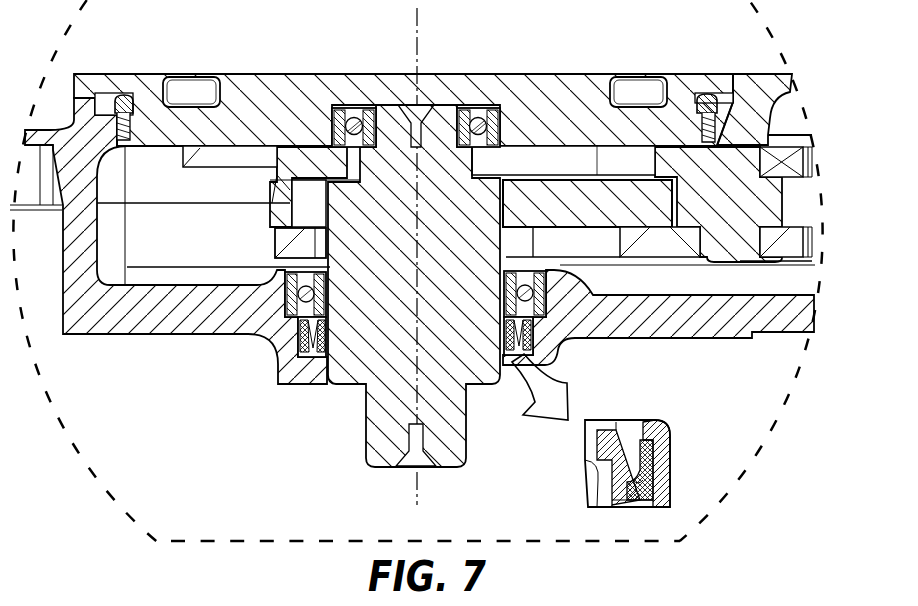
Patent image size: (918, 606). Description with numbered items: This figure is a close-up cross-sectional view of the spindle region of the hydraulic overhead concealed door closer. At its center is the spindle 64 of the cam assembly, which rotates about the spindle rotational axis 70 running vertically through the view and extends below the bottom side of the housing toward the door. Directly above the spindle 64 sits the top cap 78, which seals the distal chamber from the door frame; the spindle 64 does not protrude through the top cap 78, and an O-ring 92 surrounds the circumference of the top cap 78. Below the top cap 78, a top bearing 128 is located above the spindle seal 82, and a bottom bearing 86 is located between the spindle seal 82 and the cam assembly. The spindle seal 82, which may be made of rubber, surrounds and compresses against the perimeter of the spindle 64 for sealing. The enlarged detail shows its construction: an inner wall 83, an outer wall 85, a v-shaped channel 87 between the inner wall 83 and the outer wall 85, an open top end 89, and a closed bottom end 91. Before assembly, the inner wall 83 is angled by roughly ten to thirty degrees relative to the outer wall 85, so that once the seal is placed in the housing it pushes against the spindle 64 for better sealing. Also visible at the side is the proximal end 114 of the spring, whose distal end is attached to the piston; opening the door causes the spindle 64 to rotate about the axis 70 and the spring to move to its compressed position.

The spindle 64 is at (366, 427).
The spindle rotational axis 70 is at (418, 40).
The top cap 78 is at (303, 72).
The spindle seal 82 is at (284, 366).
The inner wall 83 is at (600, 452).
The outer wall 85 is at (670, 461).
The bottom bearing 86 is at (278, 302).
The v-shaped channel 87 is at (641, 422).
The open top end 89 is at (630, 442).
The closed bottom end 91 is at (612, 504).
The O-ring 92 is at (124, 94).
The proximal end of the spring 114 is at (800, 203).
The top bearing 128 is at (353, 108).